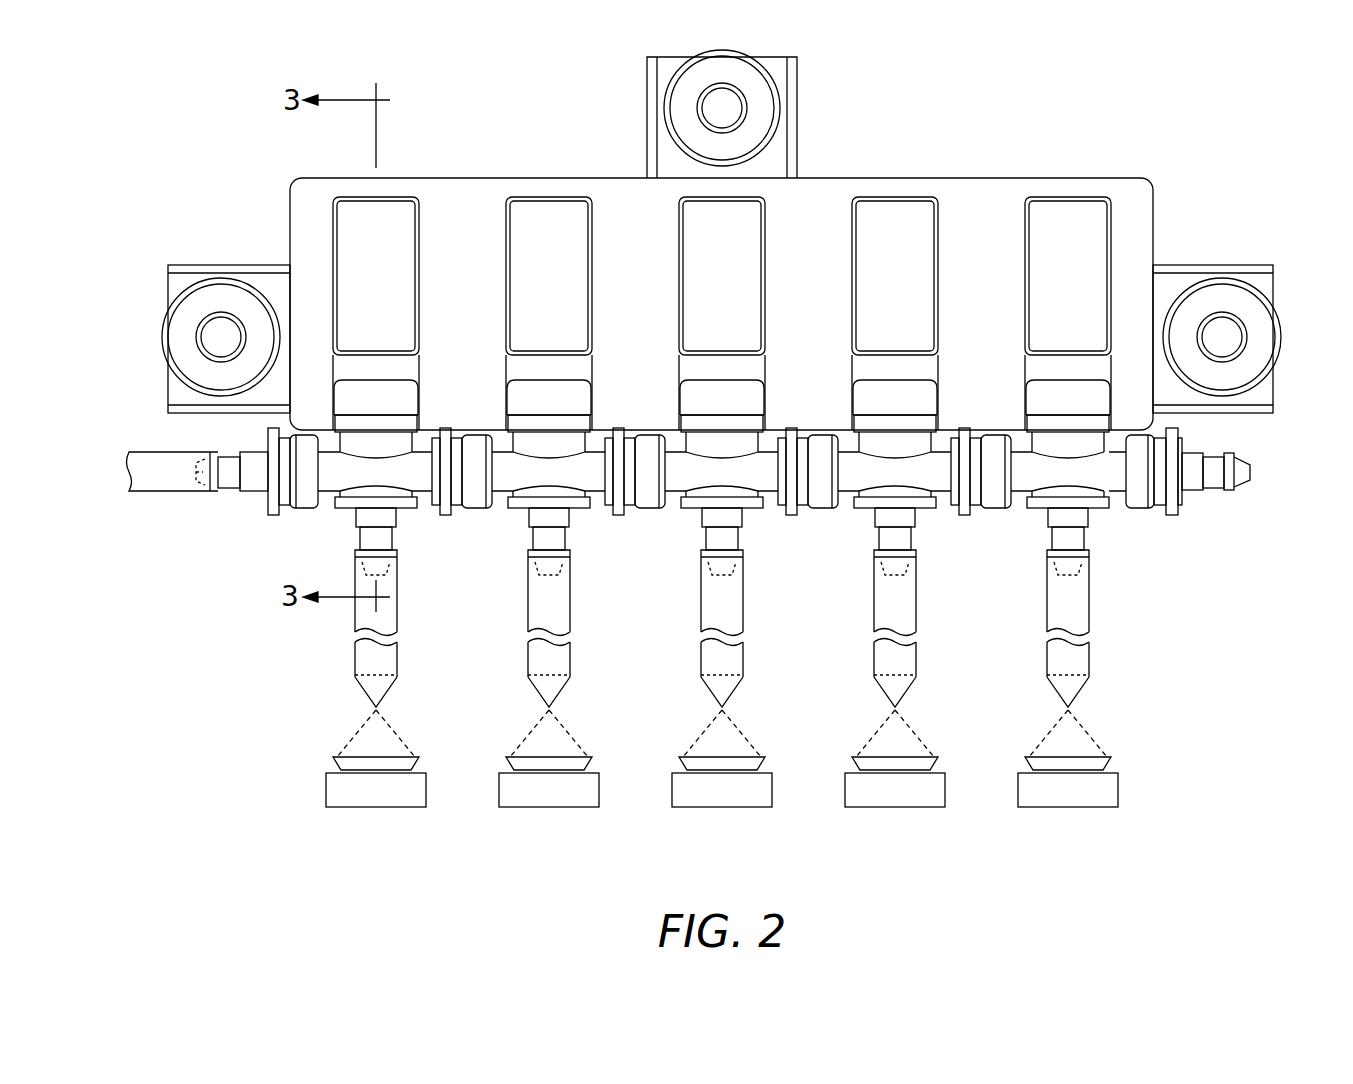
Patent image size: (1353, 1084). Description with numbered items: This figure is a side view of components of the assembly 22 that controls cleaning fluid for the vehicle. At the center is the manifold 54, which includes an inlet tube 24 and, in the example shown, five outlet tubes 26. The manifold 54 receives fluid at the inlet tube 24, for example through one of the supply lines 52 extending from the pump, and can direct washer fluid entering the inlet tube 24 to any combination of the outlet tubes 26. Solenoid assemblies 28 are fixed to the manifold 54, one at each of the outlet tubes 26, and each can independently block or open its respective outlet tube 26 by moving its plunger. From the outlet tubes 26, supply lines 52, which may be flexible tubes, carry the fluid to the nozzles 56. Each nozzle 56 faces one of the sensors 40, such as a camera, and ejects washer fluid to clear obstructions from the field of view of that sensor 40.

The assembly 22 is at (1117, 106).
The inlet tube 24 is at (230, 490).
The outlet tube 26 is at (751, 539).
The solenoid assembly 28 is at (533, 217).
The sensor 40 is at (724, 791).
The supply line 52 is at (145, 492).
The manifold 54 is at (1113, 497).
The nozzle 56 is at (750, 698).